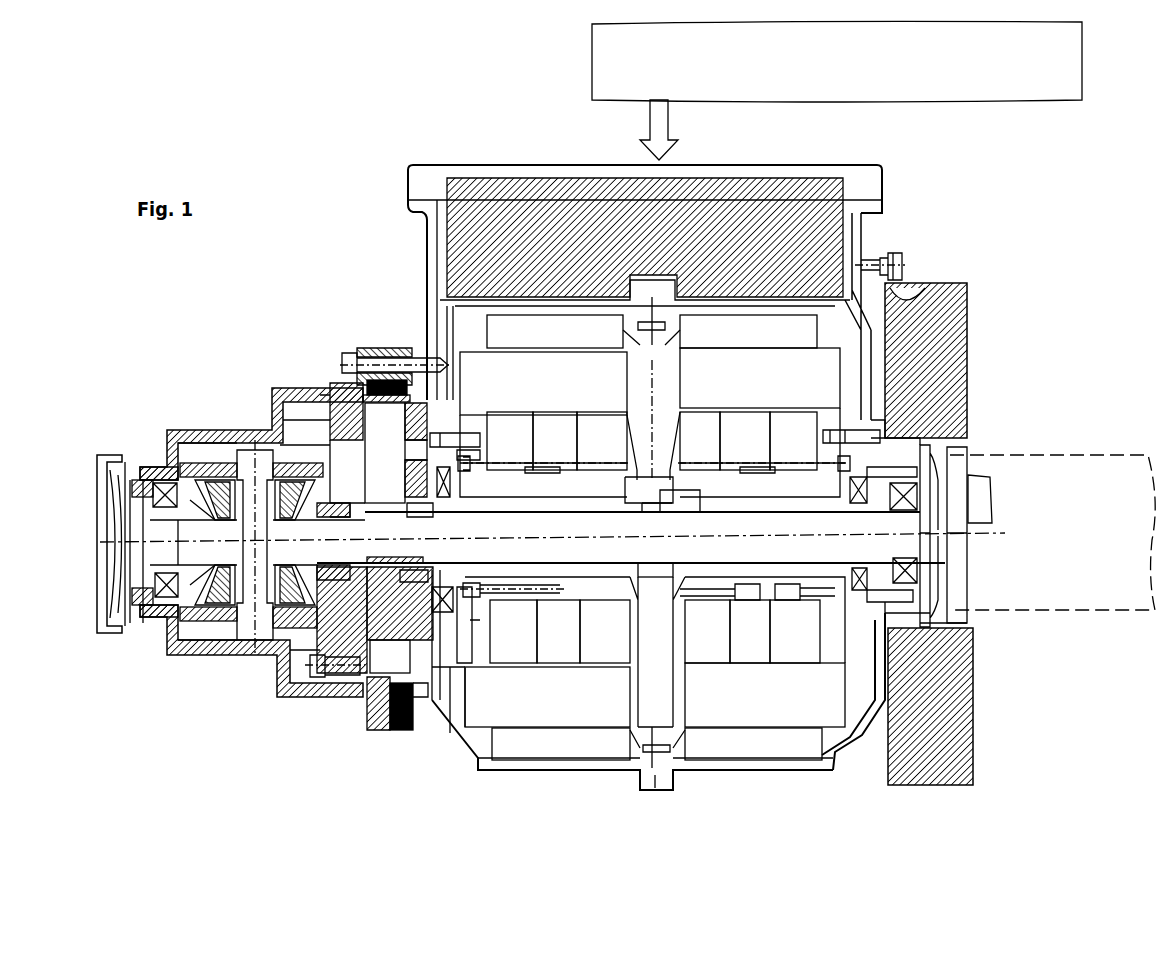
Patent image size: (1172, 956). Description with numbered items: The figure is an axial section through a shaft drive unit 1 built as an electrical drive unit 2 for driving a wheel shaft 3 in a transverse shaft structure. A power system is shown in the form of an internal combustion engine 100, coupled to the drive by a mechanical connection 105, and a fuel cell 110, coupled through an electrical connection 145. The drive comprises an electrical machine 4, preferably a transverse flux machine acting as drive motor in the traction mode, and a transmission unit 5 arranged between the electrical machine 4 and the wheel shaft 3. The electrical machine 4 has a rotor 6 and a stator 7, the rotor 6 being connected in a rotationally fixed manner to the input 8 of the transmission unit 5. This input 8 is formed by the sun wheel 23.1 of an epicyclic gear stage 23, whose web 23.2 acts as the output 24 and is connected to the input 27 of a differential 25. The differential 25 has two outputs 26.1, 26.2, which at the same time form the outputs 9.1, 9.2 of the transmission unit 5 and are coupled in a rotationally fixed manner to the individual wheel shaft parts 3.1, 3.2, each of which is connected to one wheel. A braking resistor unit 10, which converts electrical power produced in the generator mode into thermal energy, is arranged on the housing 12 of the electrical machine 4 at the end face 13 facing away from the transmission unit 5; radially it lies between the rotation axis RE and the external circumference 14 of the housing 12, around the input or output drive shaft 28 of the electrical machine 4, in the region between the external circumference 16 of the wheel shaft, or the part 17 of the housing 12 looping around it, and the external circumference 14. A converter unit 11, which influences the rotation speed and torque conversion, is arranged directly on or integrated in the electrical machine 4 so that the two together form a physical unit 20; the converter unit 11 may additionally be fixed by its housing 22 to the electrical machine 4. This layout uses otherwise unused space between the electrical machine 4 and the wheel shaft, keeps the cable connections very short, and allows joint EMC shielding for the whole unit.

The shaft drive unit 1 is at (326, 236).
The electrical drive unit 2 is at (656, 481).
The wheel shaft 3 is at (156, 584).
The wheel shaft part 3.1 is at (209, 550).
The wheel shaft part 3.2 is at (597, 546).
The electrical machine 4 is at (762, 743).
The transmission unit 5 is at (340, 378).
The rotor 6 is at (495, 703).
The stator 7 is at (573, 743).
The input of the transmission unit 8 is at (403, 577).
The output of the transmission unit 9.1 is at (210, 582).
The output of the transmission unit 9.2 is at (298, 570).
The braking resistor unit 10 is at (955, 287).
The converter unit 11 is at (707, 198).
The housing 12 is at (440, 328).
The end face 13 is at (928, 285).
The external circumference 14 is at (787, 767).
The external circumference of the wheel shaft 16 is at (932, 448).
The part of the housing 17 is at (941, 580).
The physical unit 20 is at (425, 258).
The housing of the converter unit 22 is at (873, 177).
The epicyclic gear stage 23 is at (352, 681).
The sun wheel 23.1 is at (390, 562).
The web 23.2 is at (355, 395).
The output of the epicyclic gear stage 24 is at (344, 358).
The differential 25 is at (252, 657).
The output of the differential 26.1 is at (212, 576).
The output of the differential 26.2 is at (303, 624).
The input of the differential 27 is at (247, 446).
The input drive or output drive shaft 28 is at (686, 505).
The internal combustion engine 100 is at (1077, 596).
The mechanical connection 105 is at (977, 501).
The fuel cell 110 is at (600, 30).
The electrical connection 145 is at (662, 118).
The rotation axis RE is at (918, 534).